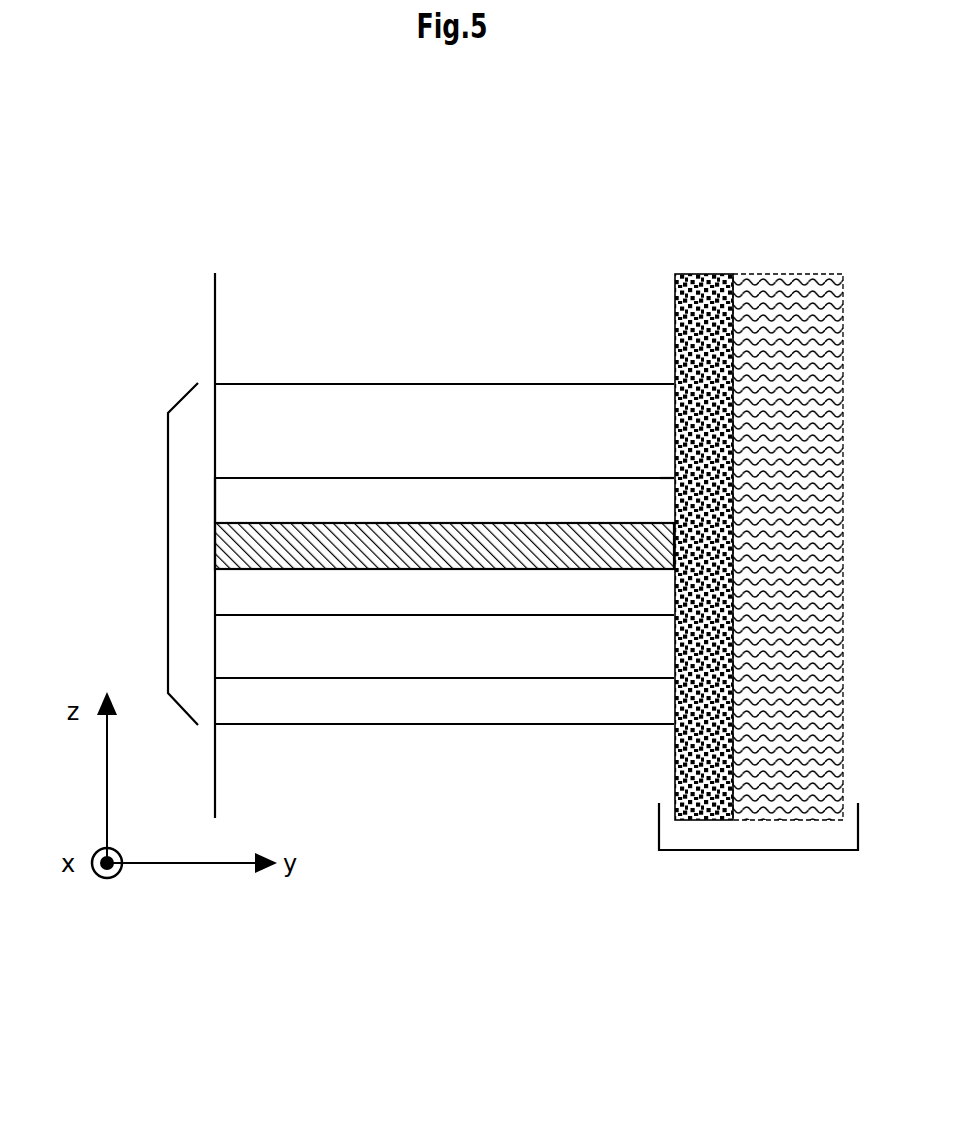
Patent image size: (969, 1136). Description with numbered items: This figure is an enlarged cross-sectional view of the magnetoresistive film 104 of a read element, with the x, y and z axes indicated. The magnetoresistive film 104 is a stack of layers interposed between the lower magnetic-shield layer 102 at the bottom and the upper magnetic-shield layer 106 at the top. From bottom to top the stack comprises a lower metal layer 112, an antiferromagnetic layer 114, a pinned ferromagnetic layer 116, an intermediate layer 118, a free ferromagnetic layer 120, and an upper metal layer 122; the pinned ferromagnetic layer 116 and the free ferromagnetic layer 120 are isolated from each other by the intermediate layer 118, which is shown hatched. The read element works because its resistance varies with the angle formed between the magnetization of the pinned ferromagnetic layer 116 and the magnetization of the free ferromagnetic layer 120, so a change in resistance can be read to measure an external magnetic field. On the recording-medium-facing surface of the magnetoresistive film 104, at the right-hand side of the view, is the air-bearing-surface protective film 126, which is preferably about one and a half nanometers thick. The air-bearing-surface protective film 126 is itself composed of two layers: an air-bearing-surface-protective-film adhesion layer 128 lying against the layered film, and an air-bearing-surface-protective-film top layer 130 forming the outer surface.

The lower magnetic-shield layer 102 is at (352, 788).
The magnetoresistive film 104 is at (168, 547).
The upper magnetic-shield layer 106 is at (302, 305).
The lower metal layer 112 is at (630, 710).
The antiferromagnetic layer 114 is at (520, 665).
The pinned ferromagnetic layer 116 is at (410, 587).
The intermediate layer 118 is at (608, 550).
The free ferromagnetic layer 120 is at (515, 495).
The upper metal layer 122 is at (420, 460).
The air-bearing-surface protective film 126 is at (760, 850).
The air-bearing-surface-protective-film adhesion layer 128 is at (705, 315).
The air-bearing-surface-protective-film top layer 130 is at (795, 315).